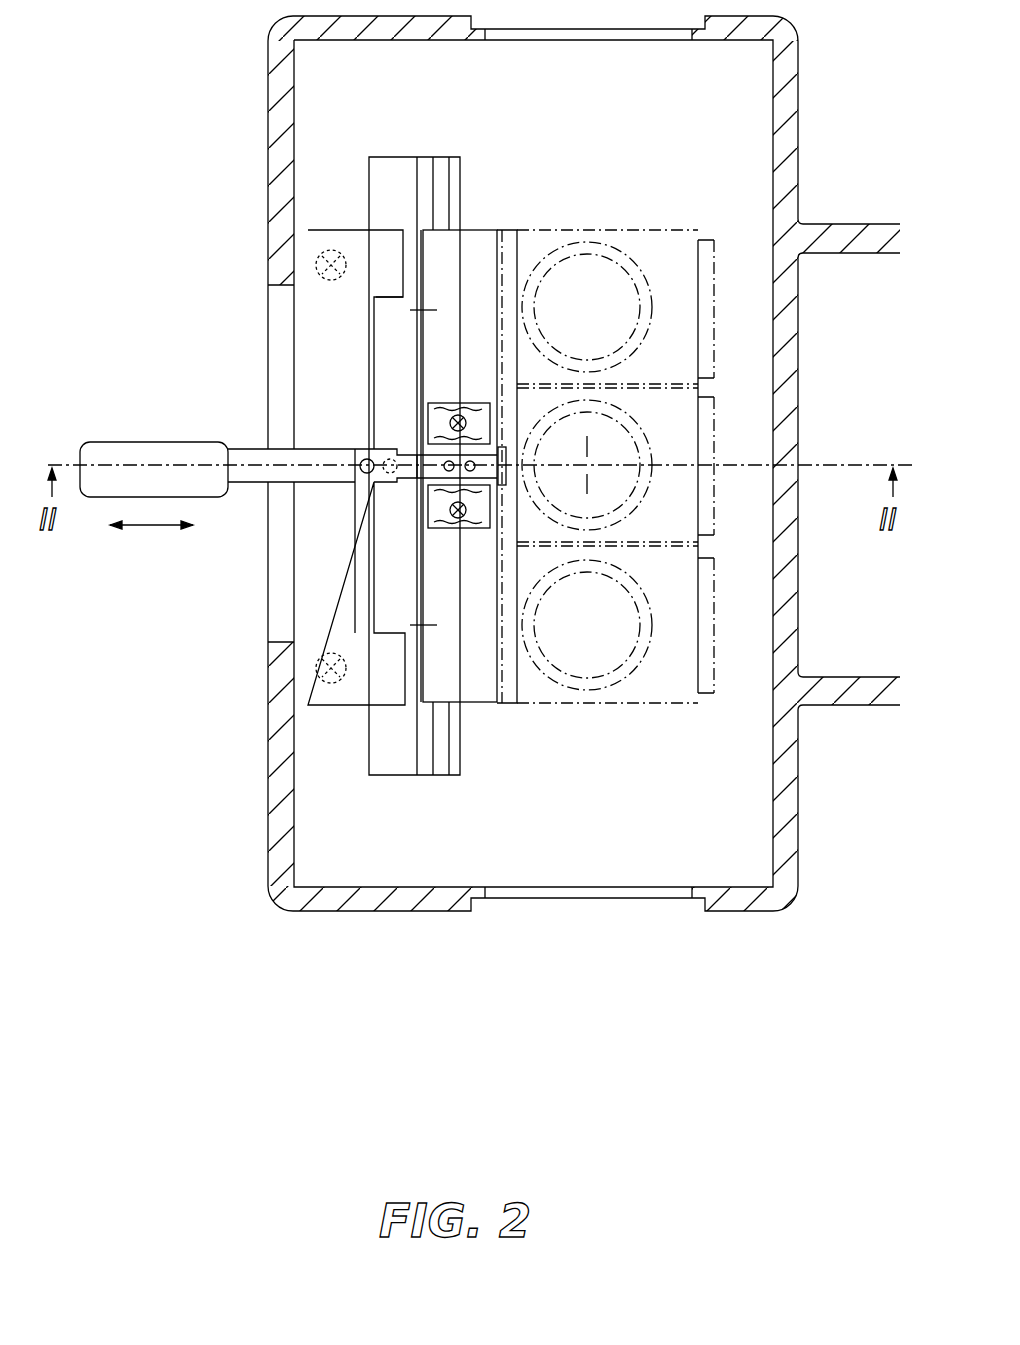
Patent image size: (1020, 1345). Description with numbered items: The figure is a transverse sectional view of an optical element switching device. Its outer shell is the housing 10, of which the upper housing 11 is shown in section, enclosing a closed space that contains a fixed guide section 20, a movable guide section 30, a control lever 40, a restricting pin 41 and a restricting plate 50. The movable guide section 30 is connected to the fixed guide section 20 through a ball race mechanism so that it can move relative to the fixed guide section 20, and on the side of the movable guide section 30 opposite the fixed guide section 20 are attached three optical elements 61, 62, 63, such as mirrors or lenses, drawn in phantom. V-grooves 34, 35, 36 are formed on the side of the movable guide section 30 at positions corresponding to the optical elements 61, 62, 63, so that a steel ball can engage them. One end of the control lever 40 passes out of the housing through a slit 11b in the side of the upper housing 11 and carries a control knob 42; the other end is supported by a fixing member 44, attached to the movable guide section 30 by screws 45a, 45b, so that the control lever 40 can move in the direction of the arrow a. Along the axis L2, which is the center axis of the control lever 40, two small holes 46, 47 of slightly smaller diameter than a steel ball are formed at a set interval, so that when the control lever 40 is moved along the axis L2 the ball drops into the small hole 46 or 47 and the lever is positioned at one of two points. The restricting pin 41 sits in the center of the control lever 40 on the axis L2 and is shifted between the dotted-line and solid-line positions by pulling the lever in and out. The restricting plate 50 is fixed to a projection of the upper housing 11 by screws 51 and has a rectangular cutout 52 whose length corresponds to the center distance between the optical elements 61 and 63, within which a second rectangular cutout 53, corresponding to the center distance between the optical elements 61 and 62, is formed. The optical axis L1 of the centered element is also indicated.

The housing 10 is at (799, 136).
The upper housing 11 is at (797, 862).
The slit 11b is at (290, 288).
The fixed guide section 20 is at (396, 763).
The movable guide section 30 is at (474, 692).
The V-groove 34 is at (423, 625).
The V-groove 35 is at (423, 473).
The V-groove 36 is at (421, 310).
The control lever 40 is at (253, 482).
The restricting pin 41 is at (362, 458).
The control knob 42 is at (140, 457).
The fixing member 44 is at (440, 413).
The screw 45a is at (462, 528).
The screw 45b is at (455, 403).
The small hole 46 is at (443, 462).
The small hole 47 is at (473, 467).
The restricting plate 50 is at (352, 691).
The screw 51 is at (316, 262).
The rectangular cutout 52 is at (390, 298).
The rectangular cutout 53 is at (362, 614).
The optical element 61 is at (688, 667).
The optical element 62 is at (683, 513).
The optical element 63 is at (690, 333).
The optical axis L1 is at (587, 465).
The axis L2 is at (253, 463).
The arrow a is at (146, 527).